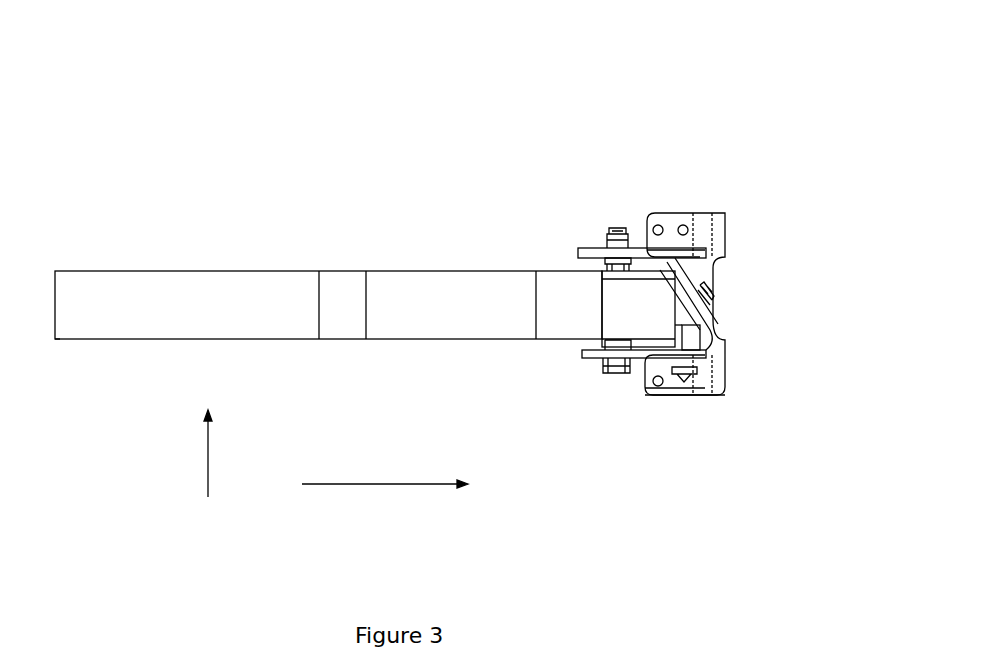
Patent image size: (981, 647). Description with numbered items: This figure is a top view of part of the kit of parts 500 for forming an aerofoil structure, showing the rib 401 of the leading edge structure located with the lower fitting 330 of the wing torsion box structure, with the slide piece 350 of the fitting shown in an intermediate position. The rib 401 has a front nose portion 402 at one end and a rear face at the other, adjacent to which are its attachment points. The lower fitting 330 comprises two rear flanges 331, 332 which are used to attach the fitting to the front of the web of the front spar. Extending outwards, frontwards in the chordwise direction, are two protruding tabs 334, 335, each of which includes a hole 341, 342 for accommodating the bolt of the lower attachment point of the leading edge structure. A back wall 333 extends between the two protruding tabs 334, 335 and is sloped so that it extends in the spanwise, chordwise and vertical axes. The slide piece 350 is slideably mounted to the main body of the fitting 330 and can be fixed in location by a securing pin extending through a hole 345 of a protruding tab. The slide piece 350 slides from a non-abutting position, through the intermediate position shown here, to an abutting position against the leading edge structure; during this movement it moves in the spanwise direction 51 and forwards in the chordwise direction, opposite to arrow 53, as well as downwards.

The kit of parts 500 is at (670, 105).
The rib 401 is at (190, 285).
The front nose portion 402 is at (58, 341).
The hole 341 is at (605, 248).
The hole 342 is at (603, 373).
The protruding tab 334 is at (633, 247).
The protruding tab 335 is at (650, 373).
The hole 345 is at (690, 377).
The lower fitting 330 is at (692, 212).
The rear flange 331 is at (726, 232).
The rear flange 332 is at (725, 380).
The back wall 333 is at (708, 310).
The slide piece 350 is at (718, 325).
The first aerofoil axis 51 is at (208, 473).
The aerofoil axis 53 is at (357, 485).